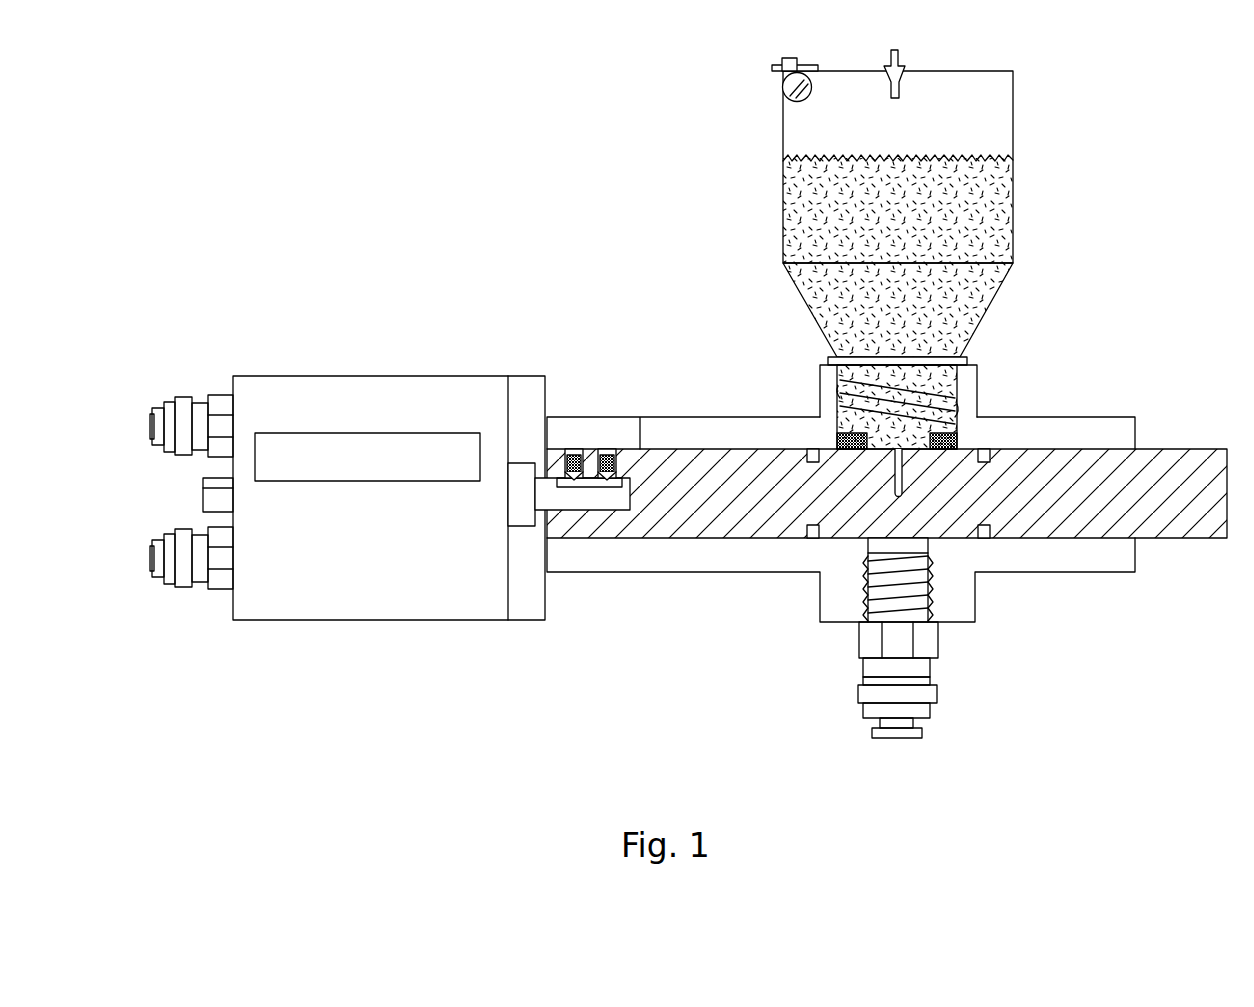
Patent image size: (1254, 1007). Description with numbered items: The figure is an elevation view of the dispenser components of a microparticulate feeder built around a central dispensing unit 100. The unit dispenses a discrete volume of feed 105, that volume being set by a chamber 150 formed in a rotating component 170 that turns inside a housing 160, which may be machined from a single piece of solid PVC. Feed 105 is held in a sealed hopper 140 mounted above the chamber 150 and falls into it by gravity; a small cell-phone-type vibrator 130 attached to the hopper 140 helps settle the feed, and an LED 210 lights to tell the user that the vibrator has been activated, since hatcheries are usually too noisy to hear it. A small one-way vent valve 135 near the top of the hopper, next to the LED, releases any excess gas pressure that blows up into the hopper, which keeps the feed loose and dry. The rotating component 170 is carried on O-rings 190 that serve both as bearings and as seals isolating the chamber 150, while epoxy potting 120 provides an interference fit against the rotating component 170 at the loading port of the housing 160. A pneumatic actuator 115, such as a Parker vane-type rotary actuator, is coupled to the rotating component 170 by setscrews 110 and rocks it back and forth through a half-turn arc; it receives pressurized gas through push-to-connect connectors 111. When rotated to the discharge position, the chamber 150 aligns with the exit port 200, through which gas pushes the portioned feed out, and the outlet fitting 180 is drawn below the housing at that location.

The central dispensing unit 100 is at (1190, 699).
The feed 105 is at (960, 217).
The setscrews 110 is at (608, 445).
The connectors 111 is at (192, 452).
The pneumatic actuator 115 is at (376, 605).
The epoxy potting 120 is at (838, 442).
The vibrator 130 is at (784, 90).
The one-way vent valve 135 is at (903, 72).
The hopper 140 is at (982, 317).
The chamber 150 is at (904, 462).
The housing 160 is at (1090, 432).
The rotating component 170 is at (754, 539).
The outlet fitting 180 is at (855, 655).
The O-rings 190 is at (808, 452).
The exit port 200 is at (916, 740).
The LED 210 is at (782, 60).